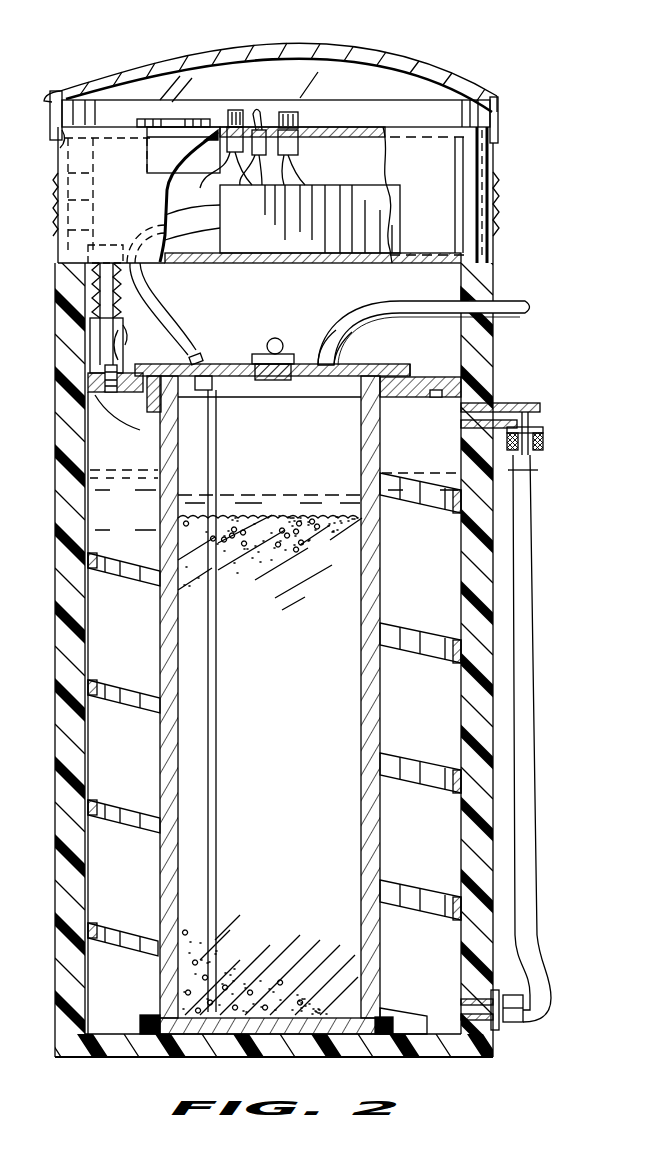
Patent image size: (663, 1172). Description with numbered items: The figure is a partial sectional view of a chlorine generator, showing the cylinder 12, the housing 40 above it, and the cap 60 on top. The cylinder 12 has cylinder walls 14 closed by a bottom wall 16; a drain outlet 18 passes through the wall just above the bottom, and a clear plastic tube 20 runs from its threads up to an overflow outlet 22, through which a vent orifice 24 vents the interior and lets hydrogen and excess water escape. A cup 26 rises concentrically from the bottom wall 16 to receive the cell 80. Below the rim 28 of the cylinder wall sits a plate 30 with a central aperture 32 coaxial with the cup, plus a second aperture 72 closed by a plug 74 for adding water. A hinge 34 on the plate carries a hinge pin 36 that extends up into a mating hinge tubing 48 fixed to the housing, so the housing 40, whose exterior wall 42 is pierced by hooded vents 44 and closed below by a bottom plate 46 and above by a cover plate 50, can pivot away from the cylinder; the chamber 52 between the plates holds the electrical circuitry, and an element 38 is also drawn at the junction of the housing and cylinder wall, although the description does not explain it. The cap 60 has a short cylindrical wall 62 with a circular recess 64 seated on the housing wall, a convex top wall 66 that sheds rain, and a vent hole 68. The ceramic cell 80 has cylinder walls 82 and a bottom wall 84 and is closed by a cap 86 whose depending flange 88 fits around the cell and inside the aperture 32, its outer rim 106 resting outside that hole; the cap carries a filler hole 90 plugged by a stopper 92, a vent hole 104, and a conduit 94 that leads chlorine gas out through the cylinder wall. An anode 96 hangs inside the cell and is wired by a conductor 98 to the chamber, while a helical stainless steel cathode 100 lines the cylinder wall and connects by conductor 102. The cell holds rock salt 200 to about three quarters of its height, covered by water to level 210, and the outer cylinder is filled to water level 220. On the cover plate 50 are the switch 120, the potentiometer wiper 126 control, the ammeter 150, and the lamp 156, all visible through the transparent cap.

The cylinder 12 is at (47, 632).
The cylinder walls 14 is at (0, 22).
The bottom or end wall 16 is at (78, 1058).
The drain outlet 18 is at (500, 1022).
The clear plastic tube 20 is at (518, 897).
The overflow outlet 22 is at (498, 406).
The vent aperture or orifice 24 is at (540, 416).
The cup 26 is at (140, 1022).
The rim 28 is at (72, 253).
The plate 30 is at (88, 385).
The central hole or aperture 32 is at (103, 396).
The hinge 34 is at (85, 342).
The hinge pin 36 is at (150, 284).
The bracket 38 is at (492, 298).
The housing 40 is at (506, 163).
The exterior cylinder wall 42 is at (58, 226).
The hooded vents 44 is at (500, 205).
The bottom plate 46 is at (254, 262).
The mating hinge tubing portion 48 is at (100, 245).
The cover plate 50 is at (368, 128).
The chamber 52 is at (315, 195).
The cap 60 is at (405, 64).
The cylindrical wall 62 is at (500, 118).
The circular recess 64 is at (60, 142).
The convex top wall 66 is at (334, 46).
The vent hole 68 is at (48, 103).
The hole or aperture 72 is at (422, 388).
The plug or stopper 74 is at (438, 386).
The cell 80 is at (392, 728).
The cylinder walls 82 is at (360, 700).
The bottom wall 84 is at (299, 1020).
The cap 86 is at (318, 360).
The depending flange 88 is at (137, 415).
The filler hole 90 is at (262, 382).
The stopper 92 is at (281, 346).
The conduit or tubing 94 is at (520, 300).
The anode 96 is at (217, 728).
The conductor 98 is at (196, 360).
The cathode 100 is at (120, 560).
The conductor 102 is at (128, 332).
The vent hole 104 is at (222, 368).
The outer rim 106 is at (412, 370).
The switch 120 is at (268, 120).
The wiper element 126 is at (295, 118).
The ammeter 150 is at (230, 126).
The lamp 156 is at (168, 120).
The rock salt 200 is at (270, 585).
The water level 210 is at (292, 494).
The water level 220 is at (525, 470).